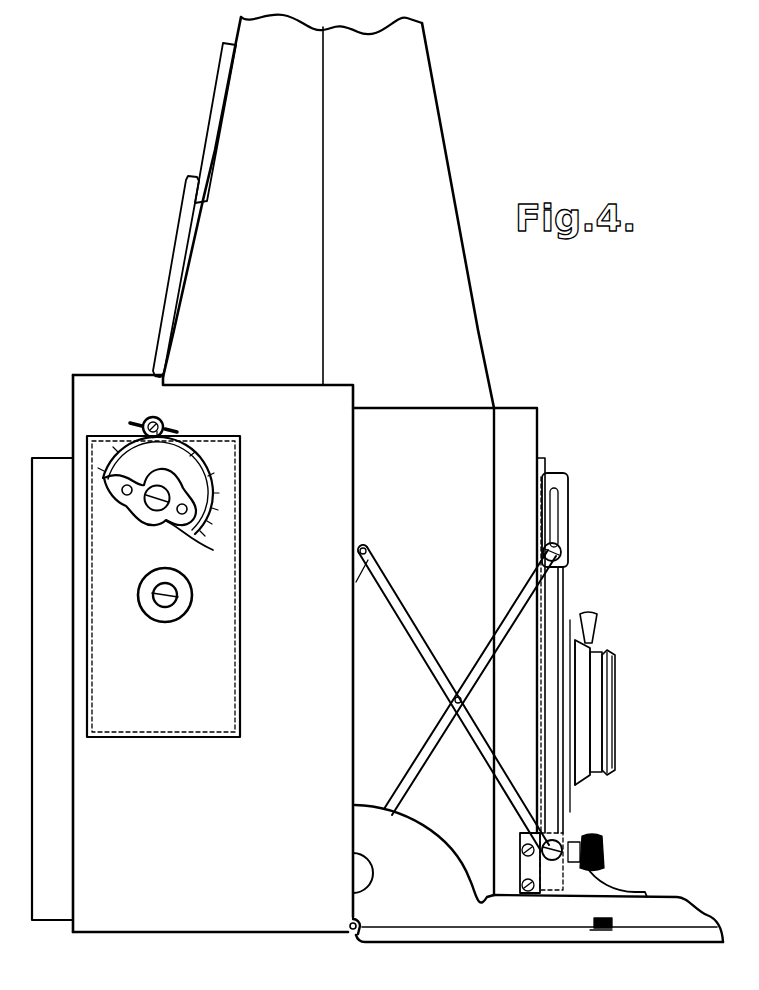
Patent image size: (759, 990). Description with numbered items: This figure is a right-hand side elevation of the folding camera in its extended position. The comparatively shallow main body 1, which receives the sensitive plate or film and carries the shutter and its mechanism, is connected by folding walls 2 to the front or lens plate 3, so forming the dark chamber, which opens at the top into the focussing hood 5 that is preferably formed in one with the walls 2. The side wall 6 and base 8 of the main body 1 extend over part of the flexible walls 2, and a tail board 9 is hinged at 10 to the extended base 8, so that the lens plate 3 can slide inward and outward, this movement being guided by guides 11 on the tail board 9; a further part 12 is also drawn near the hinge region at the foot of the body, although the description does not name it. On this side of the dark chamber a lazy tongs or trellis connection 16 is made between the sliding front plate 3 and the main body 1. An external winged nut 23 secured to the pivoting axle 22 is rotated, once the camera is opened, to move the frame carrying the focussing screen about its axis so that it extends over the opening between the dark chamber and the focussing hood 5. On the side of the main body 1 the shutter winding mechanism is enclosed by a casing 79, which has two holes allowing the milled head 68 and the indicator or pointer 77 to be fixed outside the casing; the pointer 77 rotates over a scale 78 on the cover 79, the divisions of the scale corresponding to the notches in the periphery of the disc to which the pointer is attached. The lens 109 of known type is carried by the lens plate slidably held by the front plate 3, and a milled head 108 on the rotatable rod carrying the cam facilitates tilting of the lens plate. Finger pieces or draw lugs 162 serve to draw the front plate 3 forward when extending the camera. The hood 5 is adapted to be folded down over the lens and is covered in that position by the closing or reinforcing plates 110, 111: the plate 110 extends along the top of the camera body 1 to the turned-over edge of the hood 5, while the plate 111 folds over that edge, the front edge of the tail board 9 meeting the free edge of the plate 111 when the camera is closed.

The main body 1 is at (129, 375).
The folding walls 2 is at (423, 651).
The front or lens plate 3 is at (510, 427).
The focussing hood 5 is at (328, 211).
The side wall 6 is at (197, 484).
The base 8 is at (250, 934).
The tail board 9 is at (487, 948).
The hinge 10 is at (352, 933).
The guides 11 is at (670, 905).
The sector plate 12 is at (403, 913).
The lazy tongs or trellis connection 16 is at (398, 602).
The pivoting axle 22 is at (165, 421).
The winged nut 23 is at (178, 431).
The milled head 68 is at (193, 588).
The indicator or pointer 77 is at (213, 550).
The scale 78 is at (215, 489).
The casing 79 is at (210, 617).
The milled head 108 is at (598, 846).
The lens 109 is at (600, 745).
The closing or reinforcing plate 110 is at (185, 227).
The closing or reinforcing plate 111 is at (218, 93).
The finger pieces or draw lugs 162 is at (612, 882).